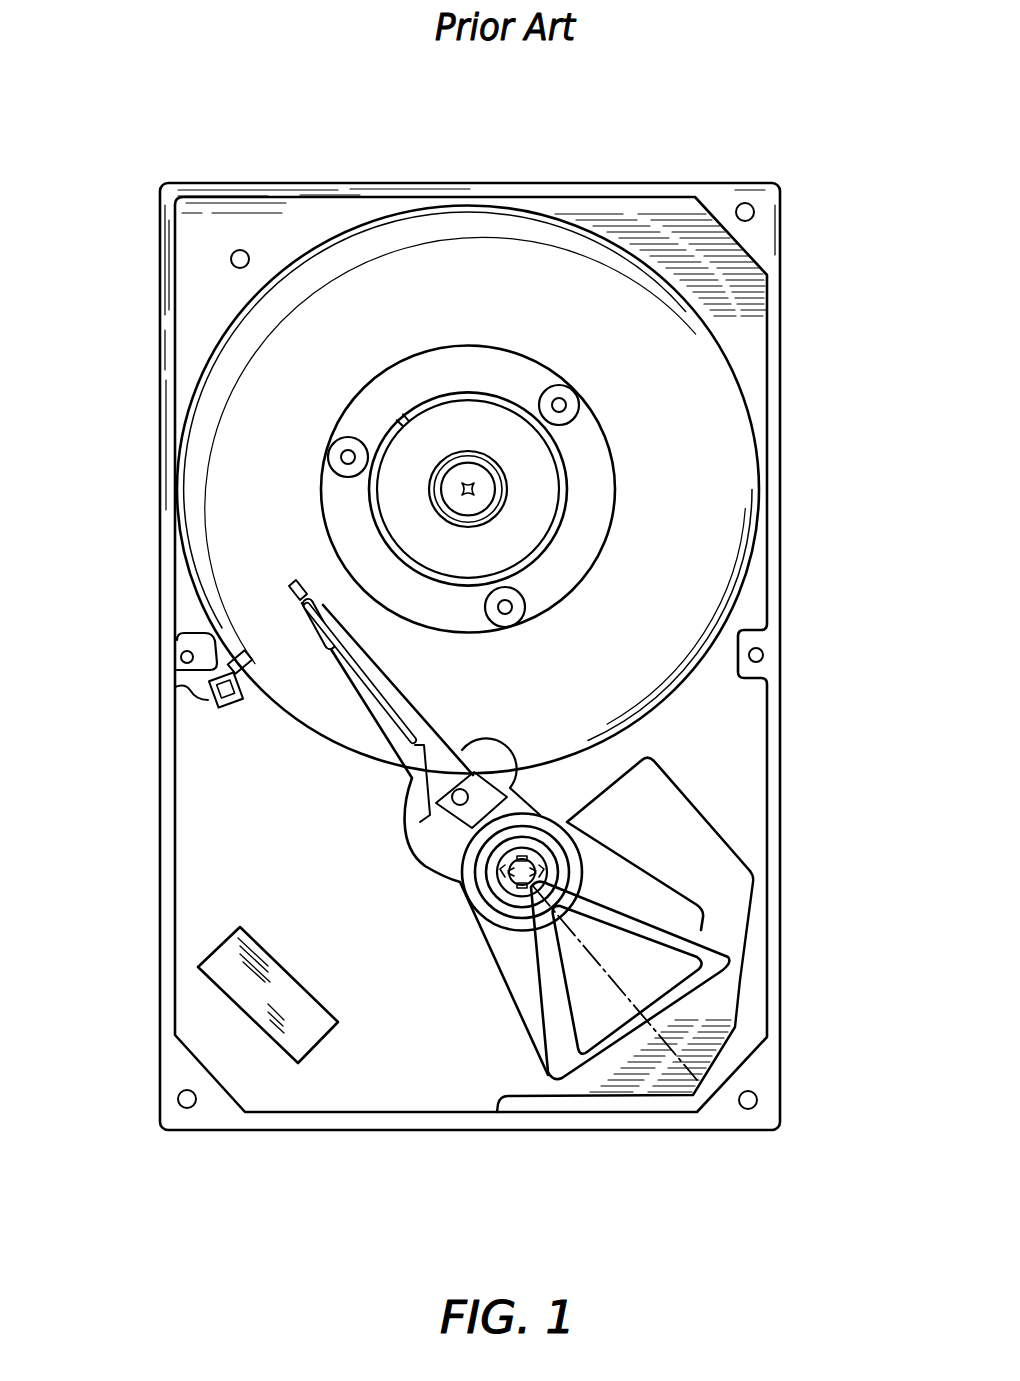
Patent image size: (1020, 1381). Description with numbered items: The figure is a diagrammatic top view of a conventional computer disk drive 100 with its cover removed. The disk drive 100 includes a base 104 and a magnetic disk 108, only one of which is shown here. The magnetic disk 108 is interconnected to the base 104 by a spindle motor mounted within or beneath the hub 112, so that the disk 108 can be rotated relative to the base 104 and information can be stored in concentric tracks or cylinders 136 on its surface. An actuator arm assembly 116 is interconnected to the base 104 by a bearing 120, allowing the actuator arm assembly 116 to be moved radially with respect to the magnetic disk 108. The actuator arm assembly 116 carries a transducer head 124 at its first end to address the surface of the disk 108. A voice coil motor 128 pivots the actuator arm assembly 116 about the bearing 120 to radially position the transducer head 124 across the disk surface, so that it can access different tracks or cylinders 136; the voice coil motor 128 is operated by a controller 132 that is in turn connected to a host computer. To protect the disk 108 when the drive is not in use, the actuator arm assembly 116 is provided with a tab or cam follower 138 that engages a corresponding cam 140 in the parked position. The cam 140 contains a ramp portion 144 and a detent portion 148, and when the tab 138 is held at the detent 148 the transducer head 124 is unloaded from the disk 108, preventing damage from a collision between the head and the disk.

The disk drive 100 is at (482, 158).
The base 104 is at (748, 746).
The magnetic disk 108 is at (732, 455).
The hub 112 is at (452, 505).
The actuator arm assembly 116 is at (344, 680).
The bearing 120 is at (520, 877).
The transducer head 124 is at (300, 620).
The voice coil motor 128 is at (587, 1063).
The controller 132 is at (250, 1003).
The tracks or cylinders 136 is at (744, 550).
The tab or cam follower 138 is at (291, 584).
The cam 140 is at (213, 672).
The ramp portion 144 is at (185, 633).
The detent portion 148 is at (208, 700).